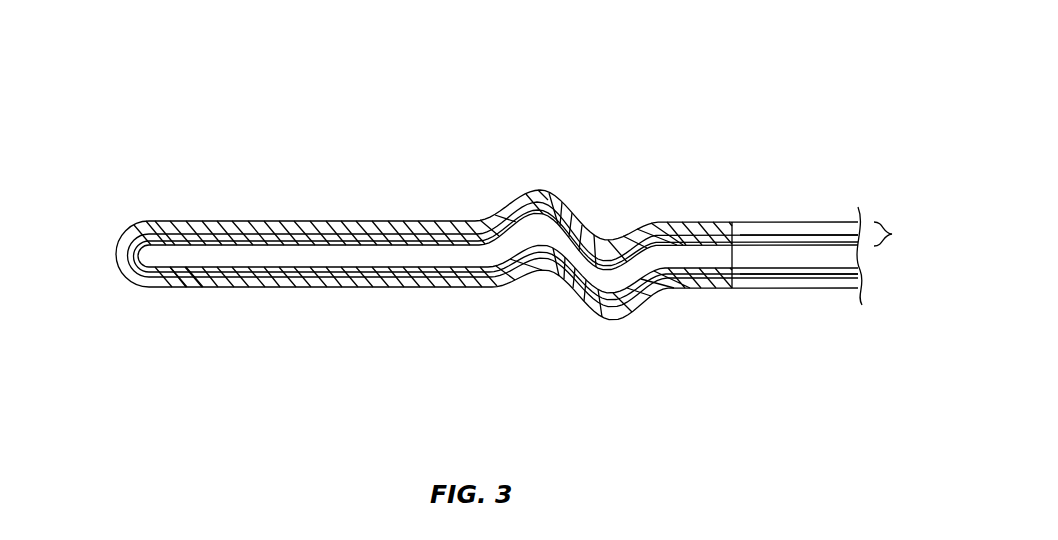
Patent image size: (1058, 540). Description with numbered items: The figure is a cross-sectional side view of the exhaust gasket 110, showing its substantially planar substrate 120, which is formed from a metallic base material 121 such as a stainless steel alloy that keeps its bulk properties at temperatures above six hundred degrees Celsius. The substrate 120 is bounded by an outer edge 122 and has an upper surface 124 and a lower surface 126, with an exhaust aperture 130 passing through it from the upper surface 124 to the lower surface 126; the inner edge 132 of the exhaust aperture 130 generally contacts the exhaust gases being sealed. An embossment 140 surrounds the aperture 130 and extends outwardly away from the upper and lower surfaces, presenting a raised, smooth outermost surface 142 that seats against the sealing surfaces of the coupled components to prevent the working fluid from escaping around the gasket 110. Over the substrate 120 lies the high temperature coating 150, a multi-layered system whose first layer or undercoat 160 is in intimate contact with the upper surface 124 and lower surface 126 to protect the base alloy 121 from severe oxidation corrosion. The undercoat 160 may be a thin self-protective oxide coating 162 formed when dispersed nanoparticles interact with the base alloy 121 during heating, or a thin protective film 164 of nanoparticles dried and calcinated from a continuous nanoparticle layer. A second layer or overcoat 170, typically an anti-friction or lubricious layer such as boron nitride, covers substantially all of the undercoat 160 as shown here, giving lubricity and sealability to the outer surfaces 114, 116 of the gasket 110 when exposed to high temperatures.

The gasket 110 is at (492, 241).
The outer surface of the gasket 114 is at (306, 160).
The outer surface of the gasket 116 is at (297, 357).
The substrate 120 is at (492, 241).
The metallic base material 121 is at (467, 255).
The outer edge 122 is at (118, 262).
The upper surface 124 is at (758, 228).
The lower surface 126 is at (791, 287).
The exhaust aperture 130 is at (826, 122).
The inner edge 132 is at (736, 258).
The embossment 140 is at (556, 135).
The outermost surface 142 is at (531, 180).
The high temperature coating 150 is at (904, 234).
The undercoat 160 is at (400, 228).
The oxide coating 162 is at (205, 272).
The protective film of nanoparticles 164 is at (407, 272).
The overcoat 170 is at (240, 220).